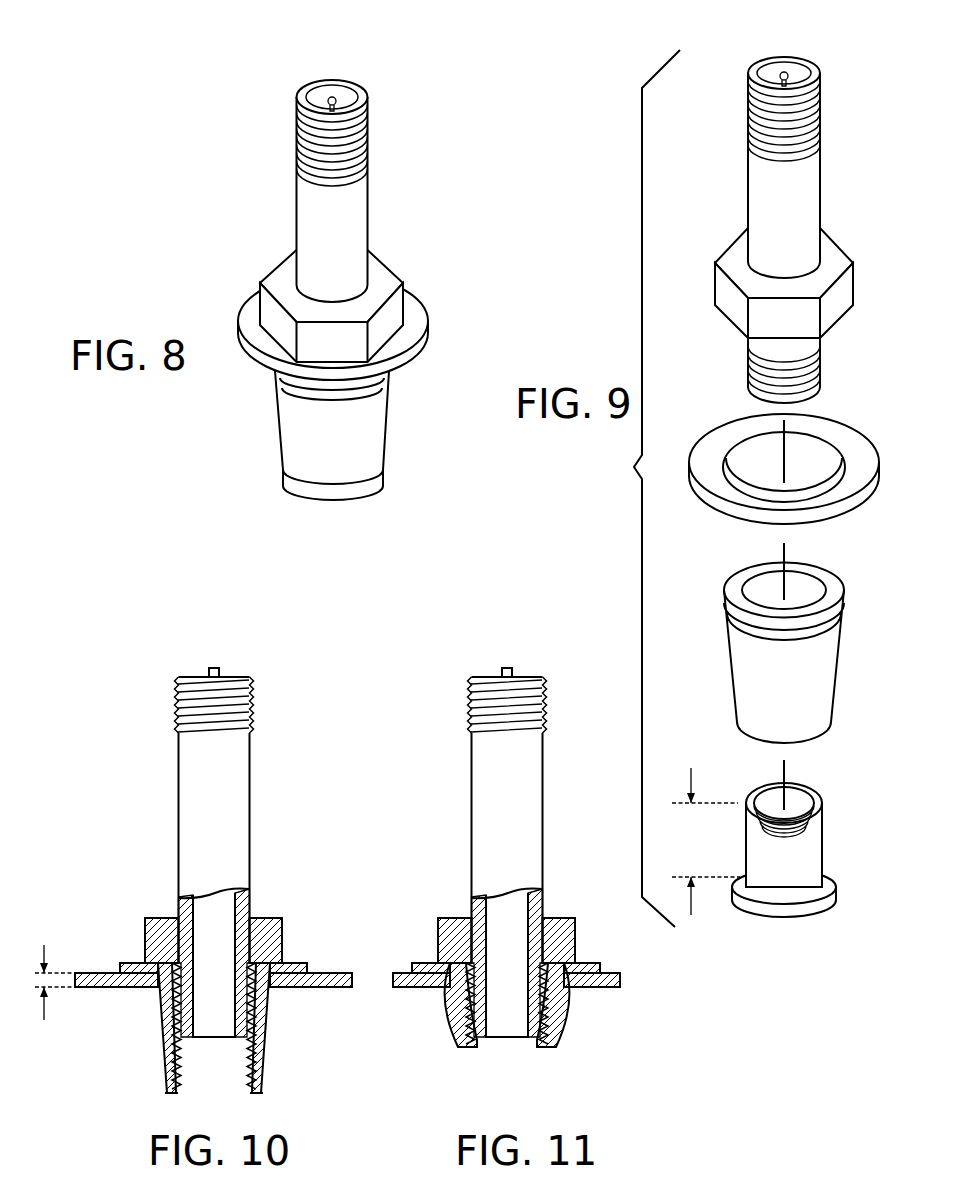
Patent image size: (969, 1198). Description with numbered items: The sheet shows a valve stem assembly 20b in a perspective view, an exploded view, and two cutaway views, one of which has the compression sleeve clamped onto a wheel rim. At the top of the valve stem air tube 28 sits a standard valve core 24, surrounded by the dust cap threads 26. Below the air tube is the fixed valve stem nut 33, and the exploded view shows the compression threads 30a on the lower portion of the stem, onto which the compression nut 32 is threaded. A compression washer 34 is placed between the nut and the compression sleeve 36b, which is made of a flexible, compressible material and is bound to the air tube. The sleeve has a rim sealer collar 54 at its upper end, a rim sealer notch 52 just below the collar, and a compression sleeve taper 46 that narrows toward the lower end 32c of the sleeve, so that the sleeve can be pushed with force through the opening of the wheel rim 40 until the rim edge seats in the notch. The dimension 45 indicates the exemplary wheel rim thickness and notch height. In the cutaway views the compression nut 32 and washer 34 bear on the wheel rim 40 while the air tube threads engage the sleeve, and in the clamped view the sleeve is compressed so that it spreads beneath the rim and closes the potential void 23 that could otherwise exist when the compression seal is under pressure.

In FIG. 8, the valve stem assembly 20b is at (213, 178).
In FIG. 9, the valve stem assembly 20b is at (583, 468).
In FIG. 10, the valve stem assembly 20b is at (130, 798).
In FIG. 11, the valve stem assembly 20b is at (435, 798).
In FIG. 11, the potential void 23 is at (487, 1033).
In FIG. 8, the valve core 24 is at (343, 97).
In FIG. 9, the valve core 24 is at (787, 63).
In FIG. 10, the valve core 24 is at (213, 668).
In FIG. 11, the valve core 24 is at (512, 672).
In FIG. 8, the dust cap threads 26 is at (368, 133).
In FIG. 9, the dust cap threads 26 is at (822, 103).
In FIG. 10, the dust cap threads 26 is at (248, 707).
In FIG. 11, the dust cap threads 26 is at (542, 725).
In FIG. 8, the valve stem air tube 28 is at (368, 223).
In FIG. 9, the valve stem air tube 28 is at (822, 192).
In FIG. 10, the valve stem air tube 28 is at (250, 778).
In FIG. 11, the valve stem air tube 28 is at (540, 823).
In FIG. 9, the lower threads 30a is at (818, 358).
In FIG. 10, the lower threads 30a is at (182, 1003).
In FIG. 11, the lower threads 30a is at (577, 1000).
In FIG. 10, the compression nut 32 is at (145, 927).
In FIG. 11, the compression nut 32 is at (438, 935).
In FIG. 8, the lower flange 32c is at (377, 488).
In FIG. 9, the lower flange 32c is at (812, 843).
In FIG. 10, the lower flange 32c is at (245, 1075).
In FIG. 11, the lower flange 32c is at (538, 1045).
In FIG. 8, the fixed valve stem nut 33 is at (272, 306).
In FIG. 9, the fixed valve stem nut 33 is at (842, 287).
In FIG. 8, the compression washer 34 is at (413, 323).
In FIG. 9, the compression washer 34 is at (867, 460).
In FIG. 8, the sleeve 36b is at (277, 425).
In FIG. 9, the sleeve 36b is at (832, 637).
In FIG. 10, the sleeve 36b is at (270, 1023).
In FIG. 11, the sleeve 36b is at (443, 1013).
In FIG. 10, the wheel rim 40 is at (138, 985).
In FIG. 11, the wheel rim 40 is at (422, 987).
In FIG. 10, the wheel rim thickness and notch height 45 is at (317, 1015).
In FIG. 9, the compression sleeve taper 46 is at (837, 707).
In FIG. 9, the rim sealer notch 52 is at (842, 623).
In FIG. 9, the rim sealer collar 54 is at (840, 580).